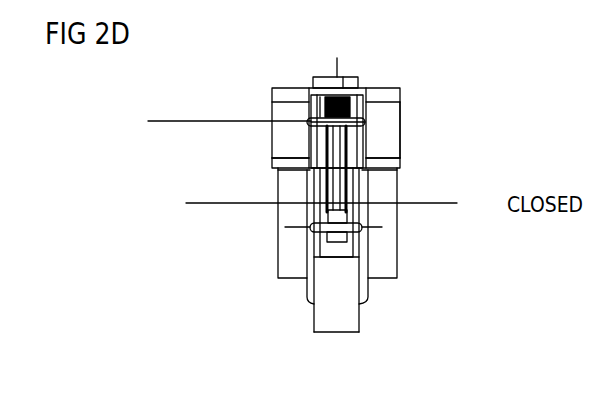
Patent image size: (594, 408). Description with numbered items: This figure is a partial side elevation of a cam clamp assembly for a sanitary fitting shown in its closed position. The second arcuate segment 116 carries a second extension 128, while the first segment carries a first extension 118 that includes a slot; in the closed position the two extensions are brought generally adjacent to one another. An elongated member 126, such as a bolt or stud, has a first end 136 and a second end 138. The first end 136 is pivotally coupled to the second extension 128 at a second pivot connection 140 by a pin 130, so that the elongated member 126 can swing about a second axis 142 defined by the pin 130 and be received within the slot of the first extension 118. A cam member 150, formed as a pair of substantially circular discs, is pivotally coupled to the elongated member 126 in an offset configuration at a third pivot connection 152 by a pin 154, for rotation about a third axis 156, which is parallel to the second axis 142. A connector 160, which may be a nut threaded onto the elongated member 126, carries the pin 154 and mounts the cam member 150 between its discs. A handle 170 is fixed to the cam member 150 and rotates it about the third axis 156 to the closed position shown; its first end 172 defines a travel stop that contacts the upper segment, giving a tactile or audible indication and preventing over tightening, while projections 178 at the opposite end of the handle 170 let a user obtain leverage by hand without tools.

The second arcuate segment 116 is at (337, 332).
The first extension 118 is at (356, 183).
The elongated member 126 is at (337, 178).
The second extension 128 is at (350, 237).
The pin 130 is at (322, 232).
The first end 136 is at (345, 213).
The second end 138 is at (377, 155).
The second pivot connection 140 is at (266, 249).
The second axis 142 is at (300, 225).
The cam member 150 is at (315, 147).
The third pivot connection 152 is at (290, 111).
The pin 154 is at (318, 120).
The third axis 156 is at (212, 122).
The connector 160 is at (359, 108).
The handle 170 is at (389, 130).
The first end 172 is at (340, 88).
The projections 178 is at (282, 161).